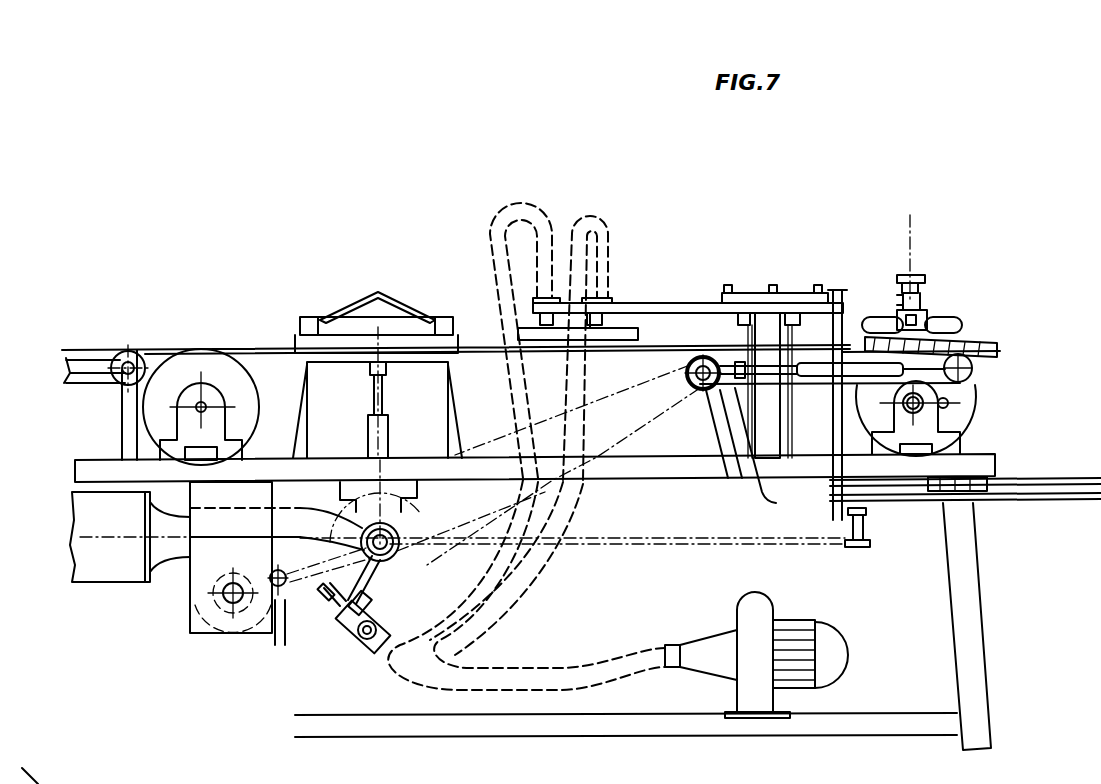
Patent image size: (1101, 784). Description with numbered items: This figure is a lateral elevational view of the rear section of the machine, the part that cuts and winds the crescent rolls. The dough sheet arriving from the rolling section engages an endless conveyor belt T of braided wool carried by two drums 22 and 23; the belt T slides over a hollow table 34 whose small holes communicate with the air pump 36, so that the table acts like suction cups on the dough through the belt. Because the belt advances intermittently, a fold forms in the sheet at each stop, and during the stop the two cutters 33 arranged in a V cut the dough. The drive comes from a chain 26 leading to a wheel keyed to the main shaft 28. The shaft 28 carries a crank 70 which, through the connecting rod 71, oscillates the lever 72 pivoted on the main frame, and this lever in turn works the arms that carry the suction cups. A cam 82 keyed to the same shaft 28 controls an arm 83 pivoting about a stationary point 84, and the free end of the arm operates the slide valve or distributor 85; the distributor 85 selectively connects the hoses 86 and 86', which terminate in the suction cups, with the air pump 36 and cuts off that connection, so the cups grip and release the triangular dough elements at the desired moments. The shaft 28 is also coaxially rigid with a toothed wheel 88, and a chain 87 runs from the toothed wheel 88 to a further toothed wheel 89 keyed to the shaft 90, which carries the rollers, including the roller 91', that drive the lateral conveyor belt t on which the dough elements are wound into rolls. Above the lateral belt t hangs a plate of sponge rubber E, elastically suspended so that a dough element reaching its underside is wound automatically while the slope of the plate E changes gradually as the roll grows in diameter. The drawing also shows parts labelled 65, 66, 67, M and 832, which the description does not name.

The drum 22 is at (220, 367).
The endless conveyor belt T is at (279, 334).
The cutters 33 is at (410, 313).
The hollow table 34 is at (452, 325).
The hose 86 is at (526, 431).
The hose 86' is at (541, 411).
The toothed wheel 89 is at (690, 352).
The chain 87 is at (653, 315).
The shaft 90 is at (697, 355).
The lever 72 is at (805, 290).
The vertical rod 67 is at (843, 290).
The plate of sponge rubber E is at (990, 338).
The drum 23 is at (967, 413).
The cylinder 66 is at (833, 412).
The bracket 65 is at (867, 533).
The roller 91' is at (707, 491).
The lateral conveyor belt t is at (763, 445).
The connecting rod 71 is at (642, 545).
The air pump 36 is at (837, 650).
The motor M is at (123, 567).
The shaft 28 is at (270, 500).
The arm 83 is at (280, 541).
The chain 26 is at (285, 620).
The toothed wheel 88 is at (447, 503).
The crank 70 is at (445, 562).
The cam 82 is at (403, 553).
The stationary point 84 is at (410, 570).
The piston rod 832 is at (337, 600).
The slide valve distributor 85 is at (353, 647).